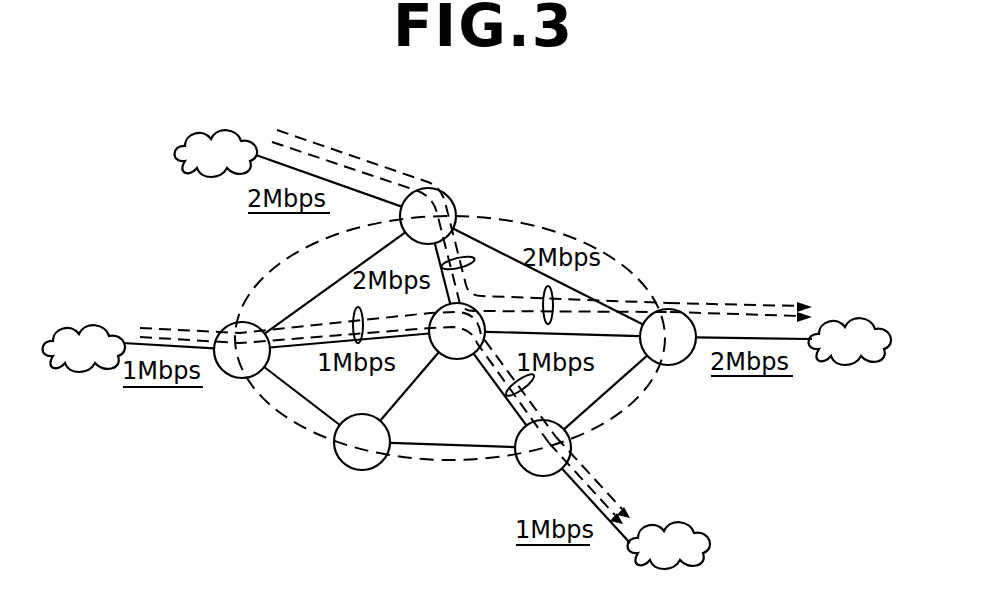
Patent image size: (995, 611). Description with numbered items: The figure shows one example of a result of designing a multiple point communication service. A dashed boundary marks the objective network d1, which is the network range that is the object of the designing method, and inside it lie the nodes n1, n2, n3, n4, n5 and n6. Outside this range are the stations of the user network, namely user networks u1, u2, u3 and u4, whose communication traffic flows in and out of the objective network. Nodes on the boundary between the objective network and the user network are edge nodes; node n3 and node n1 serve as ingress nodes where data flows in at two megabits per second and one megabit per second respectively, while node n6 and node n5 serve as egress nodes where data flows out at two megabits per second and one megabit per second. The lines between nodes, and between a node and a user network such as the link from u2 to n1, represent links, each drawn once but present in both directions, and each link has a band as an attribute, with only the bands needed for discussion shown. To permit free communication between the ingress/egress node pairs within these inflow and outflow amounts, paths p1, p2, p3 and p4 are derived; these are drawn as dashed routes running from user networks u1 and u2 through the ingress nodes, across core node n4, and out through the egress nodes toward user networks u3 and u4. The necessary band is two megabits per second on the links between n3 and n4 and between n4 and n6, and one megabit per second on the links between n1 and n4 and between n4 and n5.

The user network station u1 is at (197, 153).
The user network station u2 is at (84, 335).
The user network station u3 is at (850, 330).
The user network station u4 is at (685, 545).
The node n1 is at (242, 339).
The node n2 is at (362, 457).
The node n3 is at (440, 209).
The node n4 is at (457, 346).
The node n5 is at (533, 461).
The node n6 is at (646, 337).
The path p1 is at (388, 172).
The path p2 is at (603, 484).
The path p3 is at (725, 312).
The path p4 is at (490, 380).
The objective network d1 is at (610, 252).